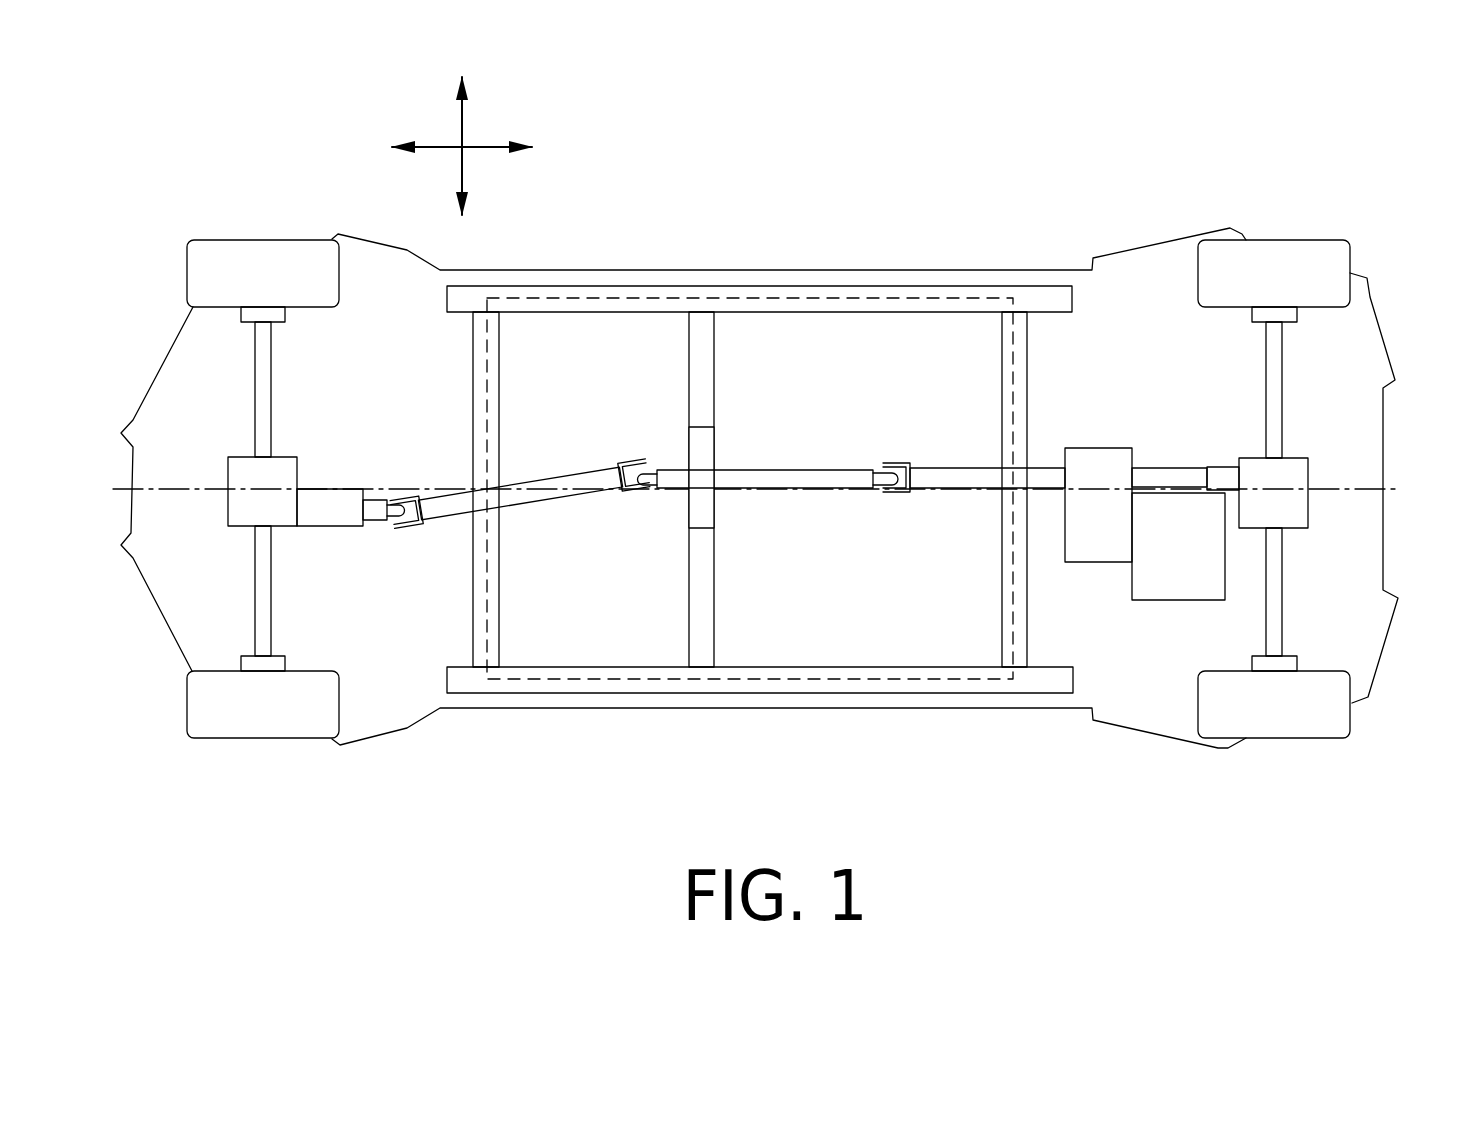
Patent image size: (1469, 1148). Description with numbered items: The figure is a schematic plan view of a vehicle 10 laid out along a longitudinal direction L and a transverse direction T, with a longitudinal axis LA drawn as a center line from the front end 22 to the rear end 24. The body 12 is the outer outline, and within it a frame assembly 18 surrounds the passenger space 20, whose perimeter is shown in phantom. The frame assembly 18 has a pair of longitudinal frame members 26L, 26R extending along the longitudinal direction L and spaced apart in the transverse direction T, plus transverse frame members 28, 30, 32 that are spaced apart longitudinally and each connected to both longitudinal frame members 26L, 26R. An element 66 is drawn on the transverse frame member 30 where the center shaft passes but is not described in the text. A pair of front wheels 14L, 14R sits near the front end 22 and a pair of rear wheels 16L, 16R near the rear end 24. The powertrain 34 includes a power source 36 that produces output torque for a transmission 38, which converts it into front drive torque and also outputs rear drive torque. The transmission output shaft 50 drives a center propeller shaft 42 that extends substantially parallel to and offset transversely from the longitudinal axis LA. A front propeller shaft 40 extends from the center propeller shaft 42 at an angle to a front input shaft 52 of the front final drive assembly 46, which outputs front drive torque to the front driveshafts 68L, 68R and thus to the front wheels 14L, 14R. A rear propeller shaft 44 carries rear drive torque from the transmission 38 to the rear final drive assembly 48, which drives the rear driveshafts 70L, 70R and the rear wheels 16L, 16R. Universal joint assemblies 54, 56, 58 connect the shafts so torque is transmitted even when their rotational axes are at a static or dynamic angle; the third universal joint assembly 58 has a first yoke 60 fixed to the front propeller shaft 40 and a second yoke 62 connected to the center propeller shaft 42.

The vehicle 10 is at (918, 218).
The body 12 is at (768, 492).
The front wheel 14R is at (257, 238).
The front wheel 14L is at (260, 740).
The rear wheel 16R is at (1300, 238).
The rear wheel 16L is at (1300, 740).
The frame assembly 18 is at (784, 506).
The passenger space 20 is at (998, 305).
The front end 22 is at (168, 627).
The rear end 24 is at (1385, 433).
The longitudinal frame member 26R is at (783, 298).
The longitudinal frame member 26L is at (1033, 683).
The transverse frame member 28 is at (499, 363).
The transverse frame member 30 is at (744, 489).
The transverse frame member 32 is at (1027, 363).
The powertrain 34 is at (274, 467).
The power source 36 is at (1175, 600).
The transmission 38 is at (1100, 562).
The front propeller shaft 40 is at (497, 508).
The center propeller shaft 42 is at (774, 482).
The rear propeller shaft 44 is at (1178, 468).
The front final drive assembly 46 is at (290, 452).
The rear final drive assembly 48 is at (1300, 453).
The transmission output shaft 50 is at (960, 468).
The front input shaft 52 is at (383, 500).
The first universal joint assembly 54 is at (390, 532).
The second universal joint assembly 56 is at (882, 498).
The third universal joint assembly 58 is at (620, 495).
The first yoke 60 is at (643, 462).
The second yoke 62 is at (660, 483).
The bearing support 66 is at (722, 440).
The front driveshaft 68R is at (255, 385).
The front driveshaft 68L is at (255, 578).
The rear driveshaft 70R is at (1266, 367).
The rear driveshaft 70L is at (1282, 610).
The longitudinal axis LA is at (187, 485).
The longitudinal direction L is at (487, 143).
The transverse direction T is at (465, 170).